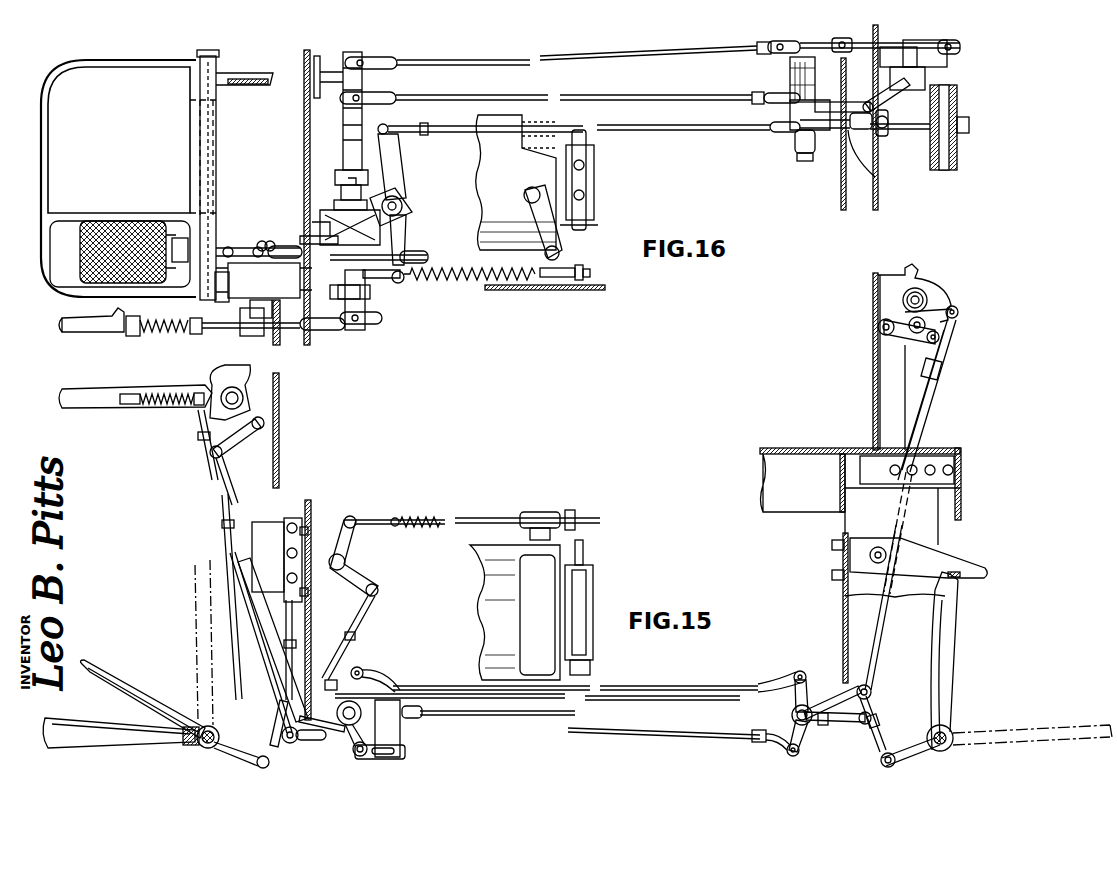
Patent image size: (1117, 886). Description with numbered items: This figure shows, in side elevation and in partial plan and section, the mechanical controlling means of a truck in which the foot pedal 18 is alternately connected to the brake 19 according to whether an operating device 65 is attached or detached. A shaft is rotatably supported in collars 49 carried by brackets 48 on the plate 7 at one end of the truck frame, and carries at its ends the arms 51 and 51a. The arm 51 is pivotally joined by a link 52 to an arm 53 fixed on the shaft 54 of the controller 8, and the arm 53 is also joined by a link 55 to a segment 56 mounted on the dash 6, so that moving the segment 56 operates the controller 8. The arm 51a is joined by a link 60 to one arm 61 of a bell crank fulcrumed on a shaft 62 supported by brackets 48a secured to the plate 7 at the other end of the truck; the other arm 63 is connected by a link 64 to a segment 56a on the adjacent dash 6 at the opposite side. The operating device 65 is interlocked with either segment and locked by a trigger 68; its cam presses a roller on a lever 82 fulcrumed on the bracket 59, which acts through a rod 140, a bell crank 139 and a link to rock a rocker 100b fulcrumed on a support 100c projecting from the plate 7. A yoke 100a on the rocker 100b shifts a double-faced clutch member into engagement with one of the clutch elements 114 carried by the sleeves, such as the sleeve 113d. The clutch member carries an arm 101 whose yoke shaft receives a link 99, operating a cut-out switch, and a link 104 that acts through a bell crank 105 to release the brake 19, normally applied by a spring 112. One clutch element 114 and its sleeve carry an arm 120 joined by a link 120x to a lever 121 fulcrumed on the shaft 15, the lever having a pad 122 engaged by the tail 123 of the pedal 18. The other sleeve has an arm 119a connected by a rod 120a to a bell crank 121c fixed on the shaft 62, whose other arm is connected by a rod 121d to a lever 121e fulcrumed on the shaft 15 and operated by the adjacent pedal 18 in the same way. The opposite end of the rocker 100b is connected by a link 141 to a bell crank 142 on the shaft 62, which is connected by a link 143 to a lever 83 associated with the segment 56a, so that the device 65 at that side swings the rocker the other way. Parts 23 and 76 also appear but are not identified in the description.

In FIG. 16, the dash 6 is at (872, 208).
In FIG. 15, the dash 6 is at (280, 445).
In FIG. 16, the plate 7 is at (304, 104).
In FIG. 15, the plate 7 is at (312, 510).
In FIG. 16, the controller 8 is at (228, 282).
In FIG. 15, the controller 8 is at (265, 525).
In FIG. 16, the shaft 15 is at (211, 60).
In FIG. 15, the shaft 15 is at (208, 748).
In FIG. 16, the foot pedal 18 is at (112, 225).
In FIG. 15, the foot pedal 18 is at (140, 686).
In FIG. 16, the brake 19 is at (592, 180).
In FIG. 15, the brake 19 is at (595, 607).
In FIG. 16, the engine block 23 is at (490, 183).
In FIG. 15, the engine block 23 is at (478, 592).
In FIG. 16, the brackets 48 is at (330, 75).
In FIG. 16, the brackets 48a is at (790, 80).
In FIG. 16, the collars 49 is at (366, 93).
In FIG. 16, the arm 51 is at (345, 330).
In FIG. 15, the arm 51 is at (306, 742).
In FIG. 16, the arm 51a is at (372, 56).
In FIG. 15, the link 52 is at (262, 630).
In FIG. 15, the arm 53 is at (220, 545).
In FIG. 15, the shaft 54 is at (290, 520).
In FIG. 15, the link 55 is at (205, 470).
In FIG. 16, the segment 56 is at (225, 332).
In FIG. 16, the segment 56a is at (950, 44).
In FIG. 15, the bracket 59 is at (278, 385).
In FIG. 16, the link 60 is at (722, 52).
In FIG. 15, the link 60 is at (478, 690).
In FIG. 16, the bell crank arm 61 is at (798, 46).
In FIG. 16, the shaft 62 is at (797, 158).
In FIG. 15, the shaft 62 is at (780, 720).
In FIG. 16, the bell crank arm 63 is at (833, 44).
In FIG. 15, the bell crank arm 63 is at (840, 727).
In FIG. 16, the link 64 is at (878, 48).
In FIG. 15, the link 64 is at (945, 355).
In FIG. 16, the operating device 65 is at (122, 334).
In FIG. 15, the operating device 65 is at (130, 386).
In FIG. 16, the trigger 68 is at (180, 335).
In FIG. 15, the trigger 68 is at (171, 405).
In FIG. 15, the bracket 76 is at (935, 290).
In FIG. 15, the lever 82 is at (245, 438).
In FIG. 15, the lever 83 is at (918, 345).
In FIG. 16, the link 99 is at (304, 246).
In FIG. 15, the link 99 is at (296, 640).
In FIG. 16, the yoke 100a is at (388, 166).
In FIG. 15, the yoke 100a is at (405, 746).
In FIG. 16, the rocker 100b is at (402, 233).
In FIG. 15, the rocker 100b is at (402, 728).
In FIG. 16, the support 100c is at (398, 192).
In FIG. 15, the support 100c is at (368, 676).
In FIG. 15, the arm 101 is at (333, 680).
In FIG. 16, the link 104 is at (341, 203).
In FIG. 15, the link 104 is at (350, 650).
In FIG. 15, the bell crank 105 is at (358, 575).
In FIG. 16, the spring 112 is at (466, 280).
In FIG. 15, the spring 112 is at (410, 520).
In FIG. 16, the sleeve 113d is at (343, 135).
In FIG. 16, the clutch element 114 is at (338, 164).
In FIG. 16, the arm 119a is at (378, 128).
In FIG. 15, the arm 120 is at (328, 732).
In FIG. 16, the link or rod 120a is at (716, 94).
In FIG. 15, the link or rod 120a is at (578, 738).
In FIG. 16, the link 120x is at (258, 238).
In FIG. 15, the link 120x is at (273, 722).
In FIG. 16, the lever 121 is at (256, 240).
In FIG. 15, the lever 121 is at (258, 770).
In FIG. 16, the bell crank 121c is at (886, 161).
In FIG. 15, the bell crank 121c is at (806, 680).
In FIG. 16, the rod 121d is at (860, 134).
In FIG. 15, the rod 121d is at (870, 722).
In FIG. 16, the lever 121e is at (875, 131).
In FIG. 15, the lever 121e is at (925, 758).
In FIG. 15, the pad 122 is at (190, 758).
In FIG. 15, the tail 123 is at (180, 745).
In FIG. 16, the bell crank 139 is at (366, 295).
In FIG. 15, the bell crank 139 is at (288, 744).
In FIG. 15, the rod 140 is at (242, 480).
In FIG. 16, the link 141 is at (718, 131).
In FIG. 15, the link 141 is at (520, 716).
In FIG. 16, the bell crank 142 is at (844, 98).
In FIG. 15, the bell crank 142 is at (797, 695).
In FIG. 16, the link 143 is at (889, 98).
In FIG. 15, the link 143 is at (880, 660).